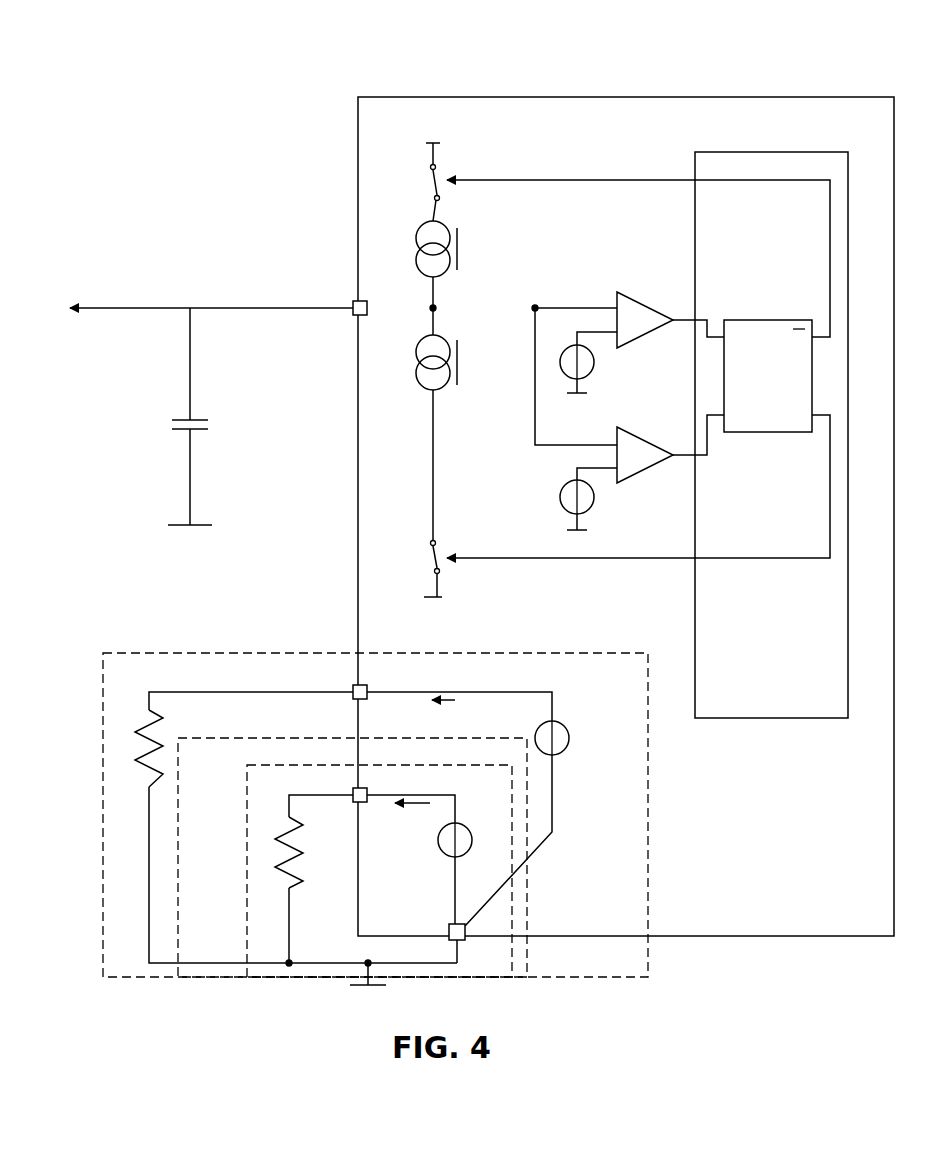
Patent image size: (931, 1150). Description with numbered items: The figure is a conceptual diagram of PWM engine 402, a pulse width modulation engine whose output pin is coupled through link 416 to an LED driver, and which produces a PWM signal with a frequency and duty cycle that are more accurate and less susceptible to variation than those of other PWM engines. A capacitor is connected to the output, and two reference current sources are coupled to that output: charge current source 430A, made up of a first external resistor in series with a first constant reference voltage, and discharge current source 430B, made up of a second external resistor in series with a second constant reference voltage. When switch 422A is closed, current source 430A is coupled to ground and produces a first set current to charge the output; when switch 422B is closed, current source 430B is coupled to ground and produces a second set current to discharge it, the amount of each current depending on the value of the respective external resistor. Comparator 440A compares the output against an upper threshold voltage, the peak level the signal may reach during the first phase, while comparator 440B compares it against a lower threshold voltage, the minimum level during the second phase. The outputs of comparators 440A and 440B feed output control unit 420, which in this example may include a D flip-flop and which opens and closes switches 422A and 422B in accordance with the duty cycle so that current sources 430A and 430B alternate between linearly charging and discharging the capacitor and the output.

The PWM engine 402 is at (775, 70).
The link 416 is at (123, 304).
The output control unit 420 is at (792, 709).
The switch 422A is at (418, 176).
The switch 422B is at (410, 560).
The charge current source 430A is at (412, 250).
The discharge current source 430B is at (412, 368).
The comparator 440A is at (617, 292).
The comparator 440B is at (617, 427).